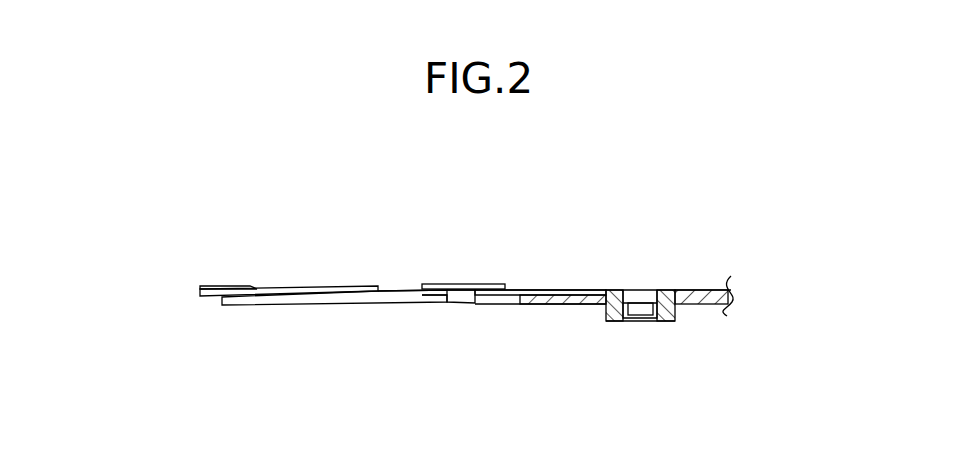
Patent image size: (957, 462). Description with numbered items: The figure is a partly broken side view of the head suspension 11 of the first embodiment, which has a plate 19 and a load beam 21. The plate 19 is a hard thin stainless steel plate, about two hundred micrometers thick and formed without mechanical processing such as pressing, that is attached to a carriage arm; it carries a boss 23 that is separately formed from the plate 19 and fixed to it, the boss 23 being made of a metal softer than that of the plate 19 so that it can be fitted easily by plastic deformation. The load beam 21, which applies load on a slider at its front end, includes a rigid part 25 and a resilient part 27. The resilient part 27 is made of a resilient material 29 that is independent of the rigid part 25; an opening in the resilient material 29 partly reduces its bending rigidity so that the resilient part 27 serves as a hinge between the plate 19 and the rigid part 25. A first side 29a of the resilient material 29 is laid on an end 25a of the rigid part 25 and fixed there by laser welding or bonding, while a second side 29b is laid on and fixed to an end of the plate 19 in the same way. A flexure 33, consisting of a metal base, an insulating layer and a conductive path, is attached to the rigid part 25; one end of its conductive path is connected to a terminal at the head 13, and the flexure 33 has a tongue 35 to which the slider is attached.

The head suspension 11 is at (512, 218).
The head 13 is at (183, 297).
The plate 19 is at (507, 306).
The load beam 21 is at (350, 303).
The boss 23 is at (612, 323).
The rigid part 25 is at (273, 305).
The end of the rigid part 25a is at (427, 303).
The resilient part 27 is at (463, 285).
The resilient material 29 is at (488, 284).
The first side of the resilient material 29a is at (442, 284).
The second side of the resilient material 29b is at (500, 283).
The flexure 33 is at (320, 285).
The tongue 35 is at (255, 286).